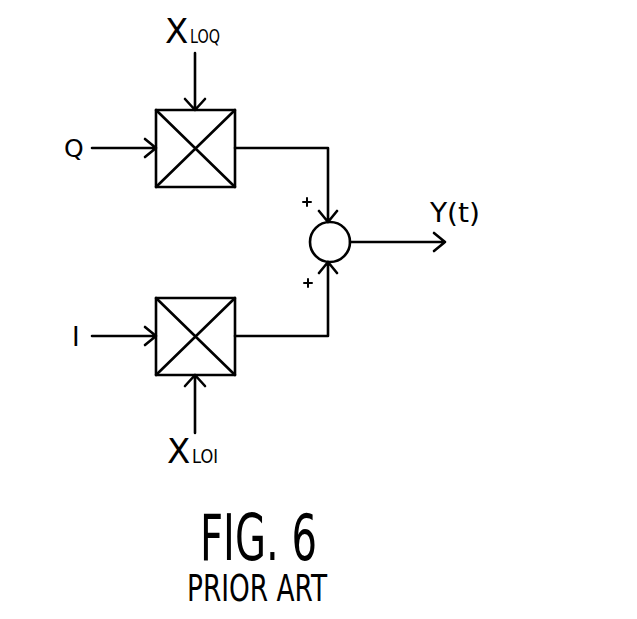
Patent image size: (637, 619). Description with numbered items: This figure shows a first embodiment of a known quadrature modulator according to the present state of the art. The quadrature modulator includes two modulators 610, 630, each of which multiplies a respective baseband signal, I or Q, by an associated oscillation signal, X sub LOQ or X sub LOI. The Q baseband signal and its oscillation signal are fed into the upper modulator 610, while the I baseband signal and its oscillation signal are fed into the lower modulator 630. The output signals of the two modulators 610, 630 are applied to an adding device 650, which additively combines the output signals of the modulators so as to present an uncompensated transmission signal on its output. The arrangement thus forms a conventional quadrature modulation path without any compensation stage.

The modulator 610 is at (222, 137).
The modulator 630 is at (220, 342).
The adding device 650 is at (333, 247).